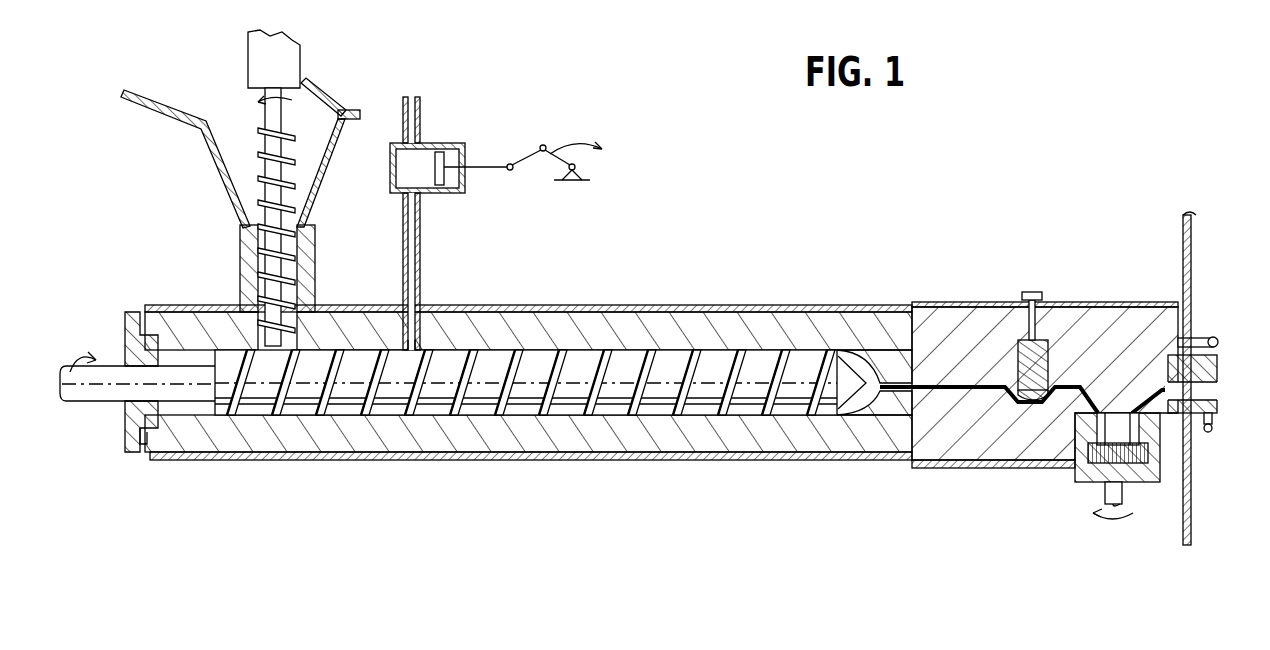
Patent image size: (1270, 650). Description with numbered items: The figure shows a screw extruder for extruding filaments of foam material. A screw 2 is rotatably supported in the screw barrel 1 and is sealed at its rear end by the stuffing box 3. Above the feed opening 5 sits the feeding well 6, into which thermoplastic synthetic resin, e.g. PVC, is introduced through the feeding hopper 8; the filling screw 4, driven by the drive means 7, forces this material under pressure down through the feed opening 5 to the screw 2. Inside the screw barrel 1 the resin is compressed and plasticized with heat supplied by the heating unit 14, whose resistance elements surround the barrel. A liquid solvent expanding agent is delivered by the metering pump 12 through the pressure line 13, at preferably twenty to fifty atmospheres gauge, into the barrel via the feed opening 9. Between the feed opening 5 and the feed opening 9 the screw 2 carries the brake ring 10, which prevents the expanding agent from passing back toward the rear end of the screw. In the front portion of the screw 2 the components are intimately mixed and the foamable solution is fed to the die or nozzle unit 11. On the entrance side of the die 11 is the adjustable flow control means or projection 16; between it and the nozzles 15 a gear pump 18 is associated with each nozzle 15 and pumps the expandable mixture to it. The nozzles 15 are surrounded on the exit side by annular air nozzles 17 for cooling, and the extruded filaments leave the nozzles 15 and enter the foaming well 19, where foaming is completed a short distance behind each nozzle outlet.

The screw barrel 1 is at (600, 432).
The screw 2 is at (82, 390).
The stuffing box 3 is at (130, 445).
The filling screw 4 is at (296, 140).
The feed opening 5 is at (242, 308).
The feeding well 6 is at (318, 258).
The drive means 7 is at (290, 48).
The feeding hopper 8 is at (180, 106).
The feed opening 9 is at (424, 338).
The brake ring 10 is at (400, 415).
The die or nozzle unit 11 is at (950, 320).
The metering pump 12 is at (442, 152).
The pressure line 13 is at (420, 240).
The heating unit 14 is at (780, 305).
The nozzles 15 is at (1218, 385).
The adjustable flow control means or projection 16 is at (1040, 345).
The annular air nozzles 17 is at (1216, 341).
The gear pump 18 is at (1080, 478).
The foaming well 19 is at (1184, 520).